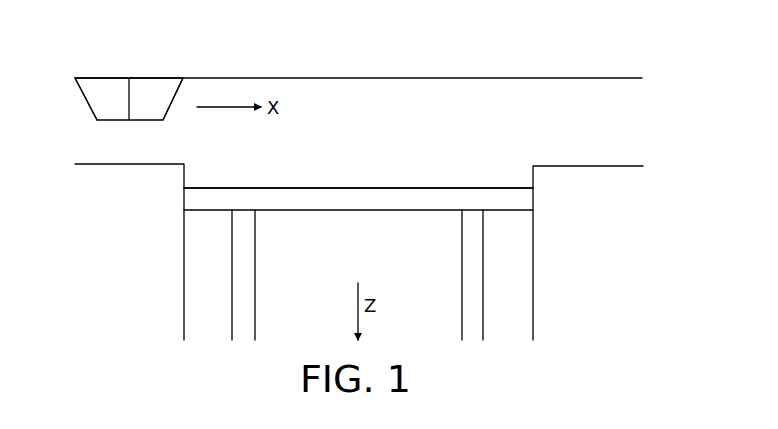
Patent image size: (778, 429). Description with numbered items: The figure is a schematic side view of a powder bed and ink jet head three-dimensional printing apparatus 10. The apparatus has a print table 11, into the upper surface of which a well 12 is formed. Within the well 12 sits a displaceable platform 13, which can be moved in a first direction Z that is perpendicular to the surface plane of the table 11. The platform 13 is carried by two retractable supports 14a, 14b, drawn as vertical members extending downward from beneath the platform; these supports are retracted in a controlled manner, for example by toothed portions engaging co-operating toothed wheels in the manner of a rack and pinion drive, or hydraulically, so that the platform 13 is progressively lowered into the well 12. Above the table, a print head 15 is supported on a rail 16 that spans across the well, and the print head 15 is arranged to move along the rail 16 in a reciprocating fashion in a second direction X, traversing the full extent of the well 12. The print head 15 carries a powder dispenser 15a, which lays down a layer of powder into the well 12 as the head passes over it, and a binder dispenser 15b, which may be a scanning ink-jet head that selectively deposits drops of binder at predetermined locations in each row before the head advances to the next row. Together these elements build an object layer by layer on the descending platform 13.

The 3D printing apparatus 10 is at (683, 72).
The print table 11 is at (592, 165).
The well 12 is at (498, 177).
The displaceable platform 13 is at (419, 190).
The retractable support 14a is at (462, 283).
The retractable support 14b is at (255, 281).
The print head 15 is at (88, 62).
The powder dispenser 15a is at (165, 110).
The binder dispenser 15b is at (88, 108).
The rail 16 is at (418, 71).